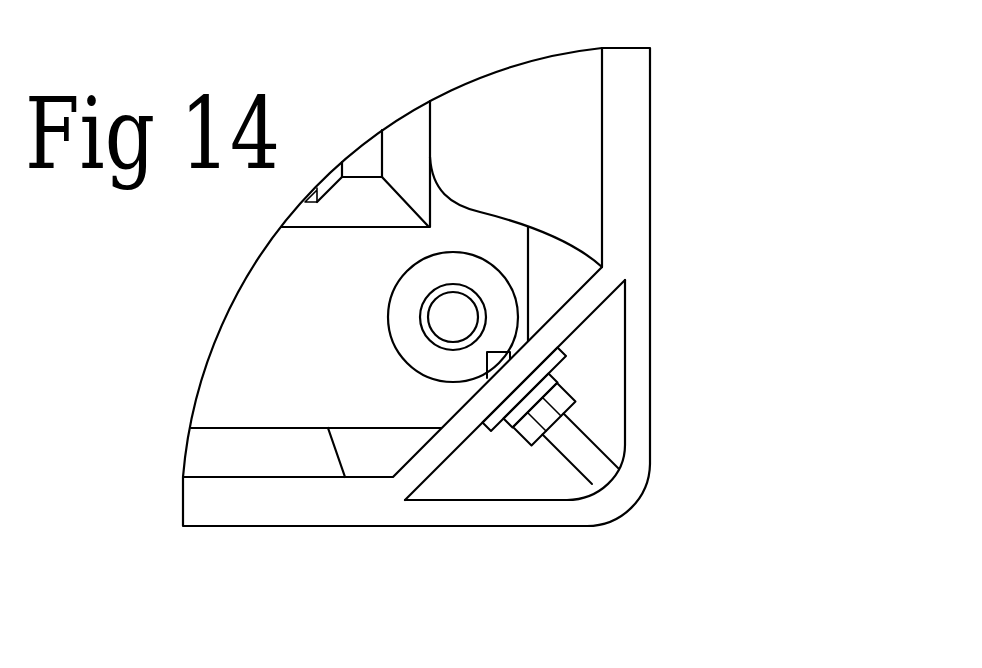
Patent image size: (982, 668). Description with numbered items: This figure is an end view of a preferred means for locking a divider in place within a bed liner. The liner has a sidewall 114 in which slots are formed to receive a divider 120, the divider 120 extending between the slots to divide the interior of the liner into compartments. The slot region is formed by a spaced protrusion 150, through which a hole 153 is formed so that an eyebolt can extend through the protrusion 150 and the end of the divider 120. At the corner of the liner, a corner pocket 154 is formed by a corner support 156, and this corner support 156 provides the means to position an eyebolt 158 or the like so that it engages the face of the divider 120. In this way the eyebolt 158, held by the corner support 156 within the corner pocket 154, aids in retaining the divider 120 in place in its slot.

The sidewall 114 is at (650, 157).
The divider 120 is at (410, 142).
The protrusion 150 is at (535, 72).
The hole 153 is at (425, 310).
The corner pocket 154 is at (603, 367).
The corner support 156 is at (548, 333).
The eyebolt 158 is at (387, 340).